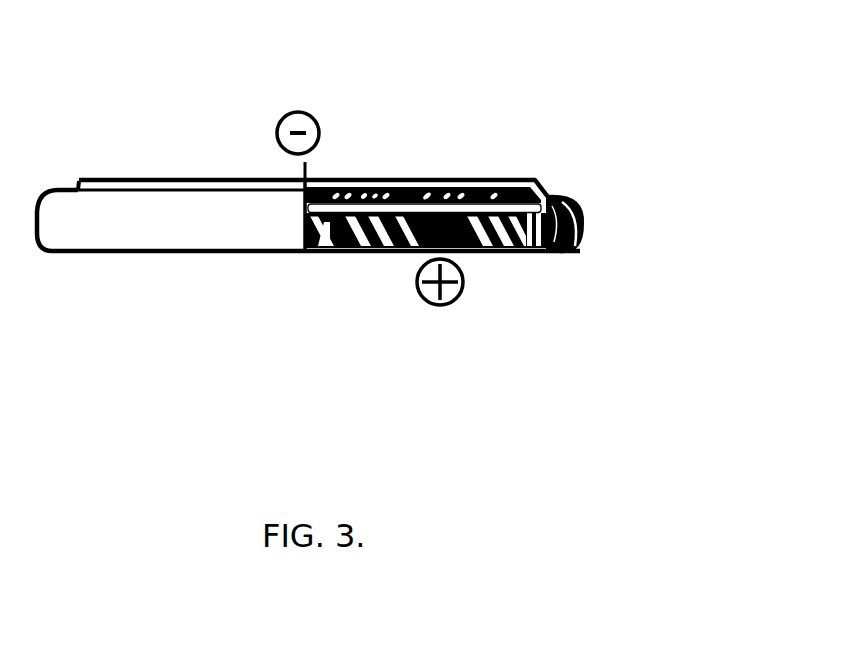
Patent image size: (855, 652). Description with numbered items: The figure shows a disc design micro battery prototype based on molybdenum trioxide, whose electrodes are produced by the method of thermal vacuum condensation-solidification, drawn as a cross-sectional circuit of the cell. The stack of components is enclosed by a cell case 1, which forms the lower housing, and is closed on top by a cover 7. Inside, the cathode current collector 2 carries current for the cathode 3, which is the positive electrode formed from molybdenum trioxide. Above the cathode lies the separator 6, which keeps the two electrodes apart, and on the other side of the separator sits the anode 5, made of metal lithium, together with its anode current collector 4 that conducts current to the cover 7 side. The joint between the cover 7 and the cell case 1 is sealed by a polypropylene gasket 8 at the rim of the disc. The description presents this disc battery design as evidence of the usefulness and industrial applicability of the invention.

The cell case 1 is at (339, 252).
The cathode current collector 2 is at (364, 252).
The cathode 3 is at (388, 236).
The anode current collector 4 is at (325, 186).
The anode 5 is at (382, 196).
The separator 6 is at (413, 217).
The cover 7 is at (343, 192).
The polypropylene gasket 8 is at (555, 253).